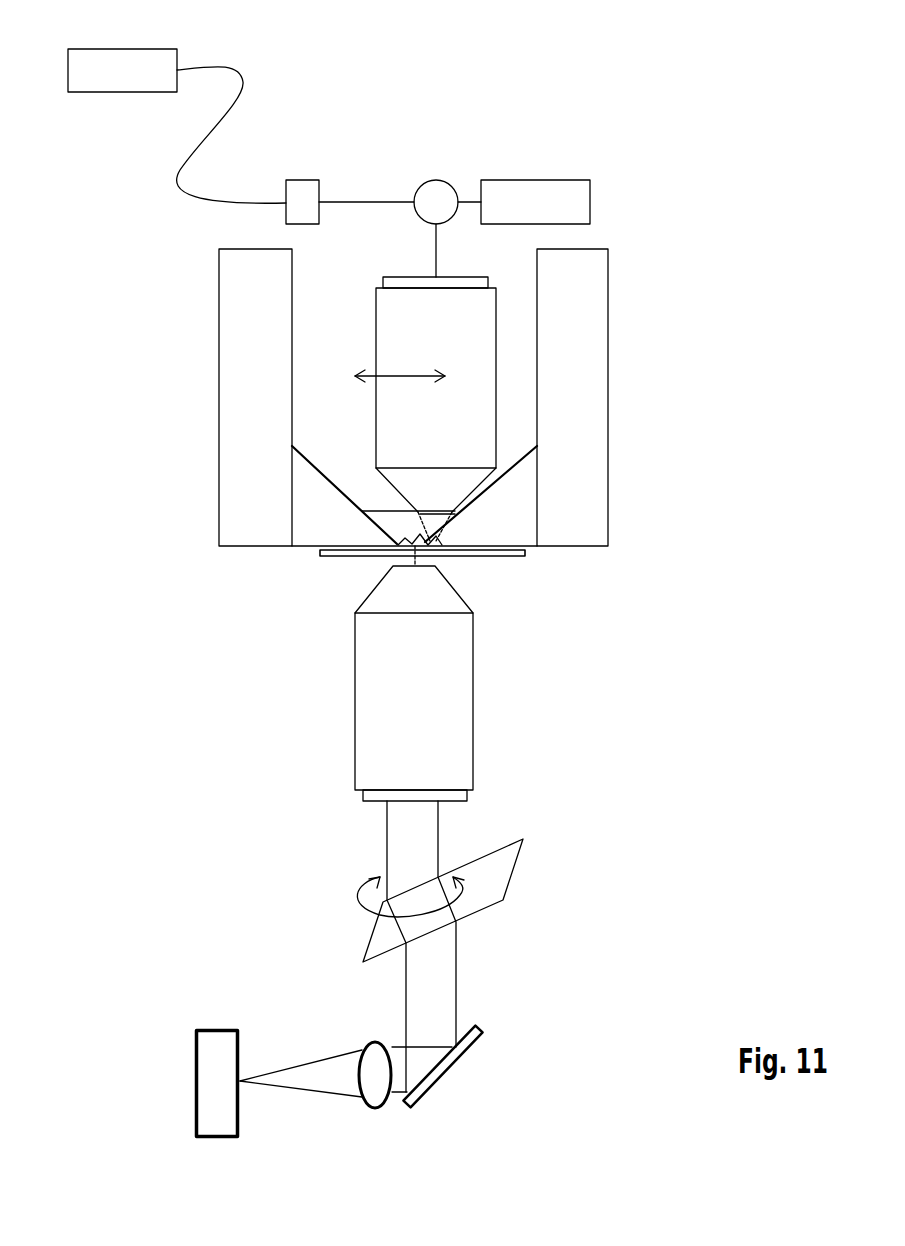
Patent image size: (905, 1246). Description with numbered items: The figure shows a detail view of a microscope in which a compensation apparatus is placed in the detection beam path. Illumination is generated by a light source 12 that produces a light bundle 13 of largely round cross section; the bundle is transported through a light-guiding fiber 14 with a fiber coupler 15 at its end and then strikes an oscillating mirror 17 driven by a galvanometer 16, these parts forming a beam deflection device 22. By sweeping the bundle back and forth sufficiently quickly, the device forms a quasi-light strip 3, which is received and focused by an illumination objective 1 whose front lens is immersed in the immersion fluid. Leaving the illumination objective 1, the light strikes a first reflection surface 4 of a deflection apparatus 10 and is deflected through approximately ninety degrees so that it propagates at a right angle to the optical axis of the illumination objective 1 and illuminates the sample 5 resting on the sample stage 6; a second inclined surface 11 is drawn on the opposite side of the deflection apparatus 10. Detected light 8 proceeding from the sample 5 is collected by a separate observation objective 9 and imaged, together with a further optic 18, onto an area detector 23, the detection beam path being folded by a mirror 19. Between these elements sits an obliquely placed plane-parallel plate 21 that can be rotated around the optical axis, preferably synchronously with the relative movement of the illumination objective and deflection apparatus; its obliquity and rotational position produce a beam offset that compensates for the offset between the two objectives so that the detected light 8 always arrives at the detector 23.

The illumination objective 1 is at (483, 347).
The quasi-light strip 3 is at (433, 263).
The first reflection surface 4 is at (309, 457).
The sample 5 is at (430, 542).
The sample stage 6 is at (350, 553).
The detected light 8 is at (423, 813).
The observation objective 9 is at (462, 708).
The deflection apparatus 10 is at (207, 418).
The right inclined optical element 11 is at (515, 462).
The light source 12 is at (117, 58).
The light bundle 13 is at (387, 202).
The light-guiding fiber 14 is at (220, 113).
The fiber coupler 15 is at (307, 187).
The galvanometer 16 is at (547, 193).
The oscillating mirror 17 is at (443, 193).
The further optic 18 is at (373, 1062).
The mirror 19 is at (450, 1068).
The plane-parallel plate 21 is at (500, 872).
The beam deflection device 22 is at (521, 127).
The area detector 23 is at (207, 1070).